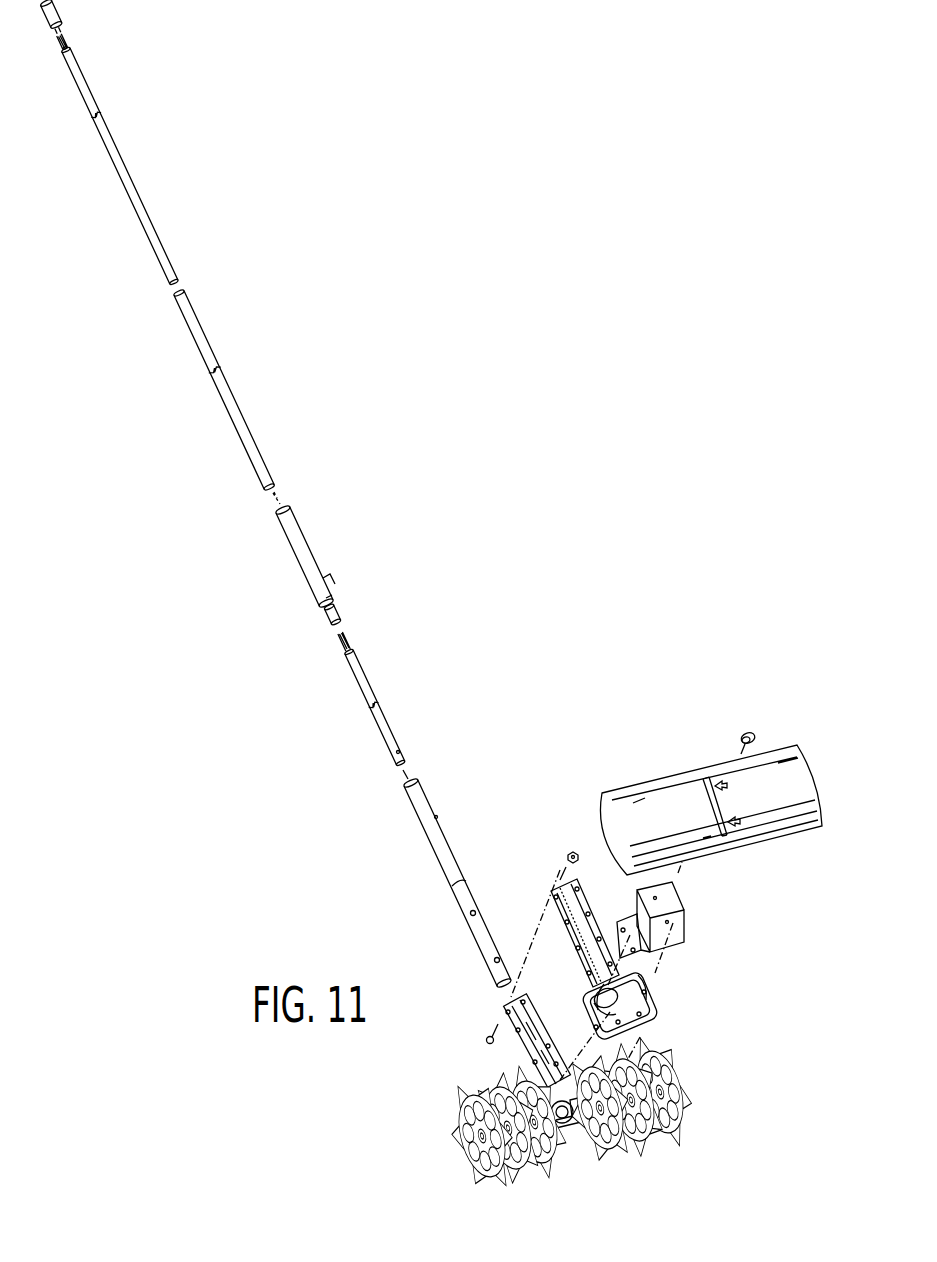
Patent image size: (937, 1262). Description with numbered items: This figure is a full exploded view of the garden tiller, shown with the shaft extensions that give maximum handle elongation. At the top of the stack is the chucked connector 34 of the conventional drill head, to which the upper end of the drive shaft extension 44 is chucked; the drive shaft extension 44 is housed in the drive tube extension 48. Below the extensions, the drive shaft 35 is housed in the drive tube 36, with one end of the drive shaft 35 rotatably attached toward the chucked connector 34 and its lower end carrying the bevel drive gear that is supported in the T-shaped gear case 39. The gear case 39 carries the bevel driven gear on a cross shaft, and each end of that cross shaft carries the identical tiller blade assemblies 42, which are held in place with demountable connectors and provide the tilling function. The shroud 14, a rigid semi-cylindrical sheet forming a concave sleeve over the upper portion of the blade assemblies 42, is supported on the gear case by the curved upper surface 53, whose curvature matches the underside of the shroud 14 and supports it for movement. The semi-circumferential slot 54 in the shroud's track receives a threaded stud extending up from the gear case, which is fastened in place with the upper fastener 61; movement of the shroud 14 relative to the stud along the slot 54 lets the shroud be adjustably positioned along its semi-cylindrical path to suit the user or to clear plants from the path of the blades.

The shroud 14 is at (645, 813).
The chucked connector 34 is at (61, 13).
The drive shaft 35 is at (447, 843).
The drive tube 36 is at (395, 740).
The T-shaped gear case 39 is at (572, 936).
The tiller blade assemblies 42 is at (687, 1080).
The drive shaft extension 44 is at (145, 207).
The drive tube extension 48 is at (247, 434).
The curved upper surface 53 is at (683, 906).
The semi-circumferential slot 54 is at (712, 805).
The upper fastener 61 is at (757, 736).